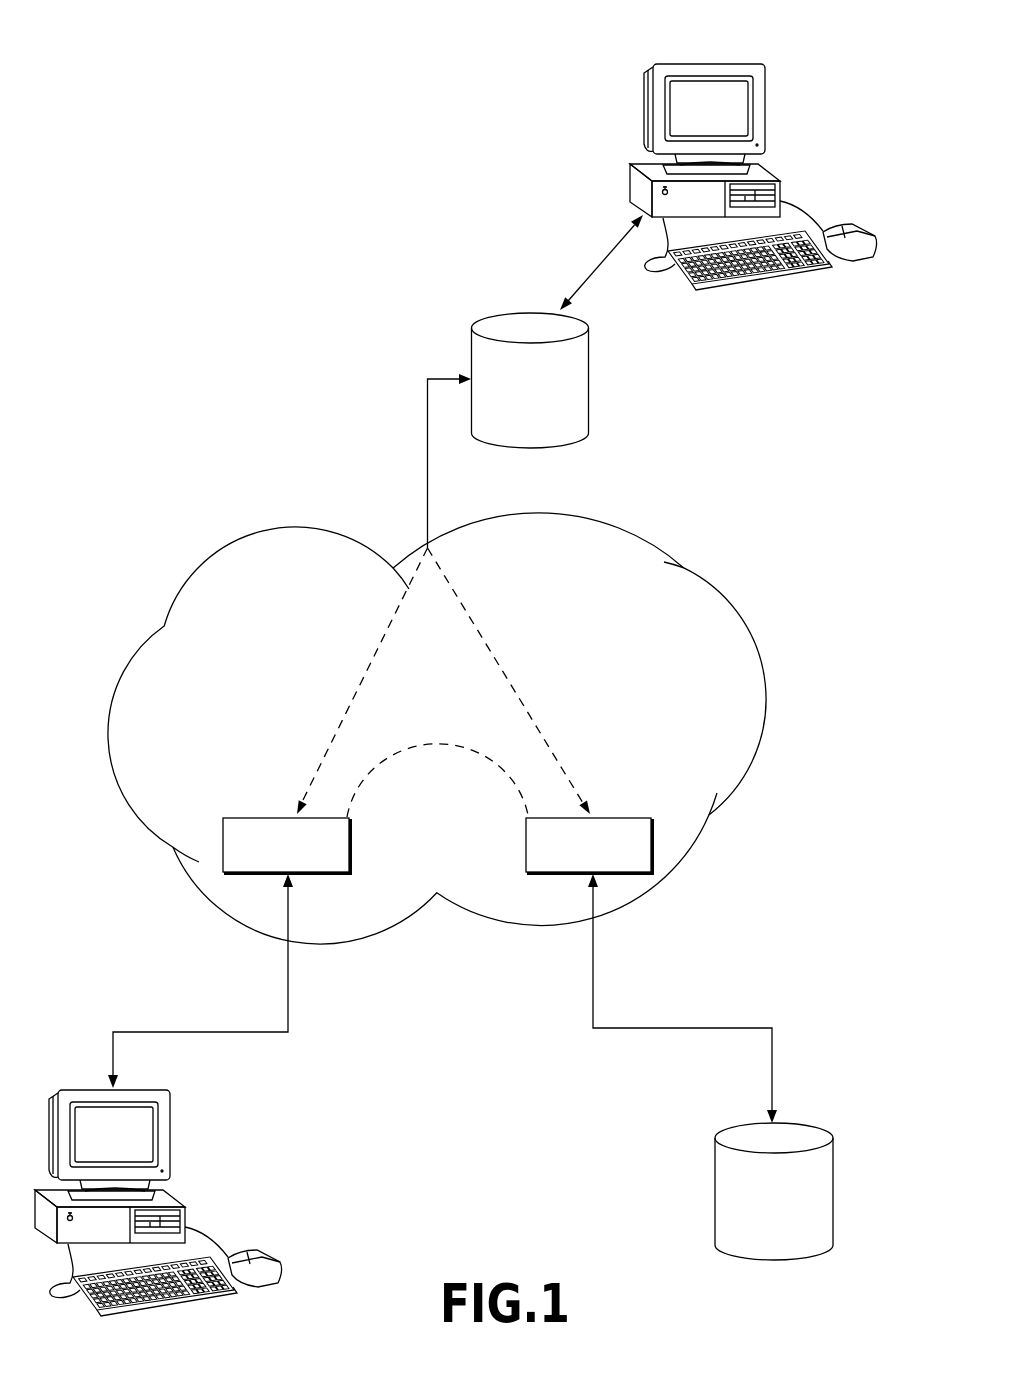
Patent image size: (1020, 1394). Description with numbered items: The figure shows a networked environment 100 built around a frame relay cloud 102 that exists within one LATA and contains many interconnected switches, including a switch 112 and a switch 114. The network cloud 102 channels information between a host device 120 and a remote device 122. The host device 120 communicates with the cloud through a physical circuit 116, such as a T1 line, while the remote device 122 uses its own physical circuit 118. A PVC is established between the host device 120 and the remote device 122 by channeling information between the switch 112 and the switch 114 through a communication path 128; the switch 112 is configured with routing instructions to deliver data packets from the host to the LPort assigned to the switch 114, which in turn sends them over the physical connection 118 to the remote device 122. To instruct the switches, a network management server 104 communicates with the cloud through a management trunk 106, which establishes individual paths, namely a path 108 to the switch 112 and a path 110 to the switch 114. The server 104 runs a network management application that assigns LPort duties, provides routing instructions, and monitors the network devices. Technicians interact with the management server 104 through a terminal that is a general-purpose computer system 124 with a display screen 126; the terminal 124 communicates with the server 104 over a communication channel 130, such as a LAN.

The networked environment 100 is at (147, 210).
The frame relay cloud 102 is at (607, 520).
The network management server 104 is at (517, 311).
The management trunk 106 is at (425, 456).
The path 108 is at (483, 636).
The path 110 is at (388, 635).
The switch 112 is at (610, 816).
The switch 114 is at (267, 816).
The physical circuit 116 is at (668, 1027).
The physical circuit 118 is at (192, 1031).
The host device 120 is at (815, 1125).
The remote device 122 is at (181, 1193).
The general-purpose computer system 124 is at (638, 166).
The display screen 126 is at (757, 63).
The communication path 128 is at (474, 765).
The communication channel 130 is at (607, 254).